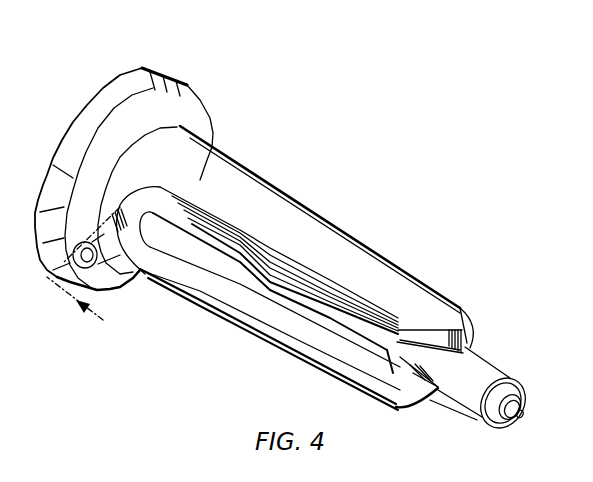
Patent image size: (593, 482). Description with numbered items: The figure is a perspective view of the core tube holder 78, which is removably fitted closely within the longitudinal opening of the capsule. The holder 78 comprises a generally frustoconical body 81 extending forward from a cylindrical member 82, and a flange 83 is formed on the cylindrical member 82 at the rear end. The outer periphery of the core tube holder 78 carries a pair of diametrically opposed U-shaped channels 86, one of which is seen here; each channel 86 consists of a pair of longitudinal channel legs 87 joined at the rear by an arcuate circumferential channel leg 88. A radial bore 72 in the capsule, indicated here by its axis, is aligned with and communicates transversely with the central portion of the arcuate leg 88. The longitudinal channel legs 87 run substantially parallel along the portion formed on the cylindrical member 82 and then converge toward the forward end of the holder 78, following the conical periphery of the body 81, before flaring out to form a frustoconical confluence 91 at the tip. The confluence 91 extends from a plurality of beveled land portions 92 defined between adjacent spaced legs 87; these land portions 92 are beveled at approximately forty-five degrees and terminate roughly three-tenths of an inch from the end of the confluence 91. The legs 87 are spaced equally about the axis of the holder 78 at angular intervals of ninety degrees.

The radial bore 72 is at (97, 258).
The core tube holder 78 is at (238, 347).
The frustoconical body 81 is at (387, 270).
The cylindrical member 82 is at (188, 144).
The flange 83 is at (157, 72).
The U-shaped channel 86 is at (140, 182).
The longitudinal channel leg 87 is at (260, 255).
The arcuate circumferential channel leg 88 is at (140, 200).
The frustoconical confluence 91 is at (485, 367).
The beveled land portion 92 is at (482, 342).